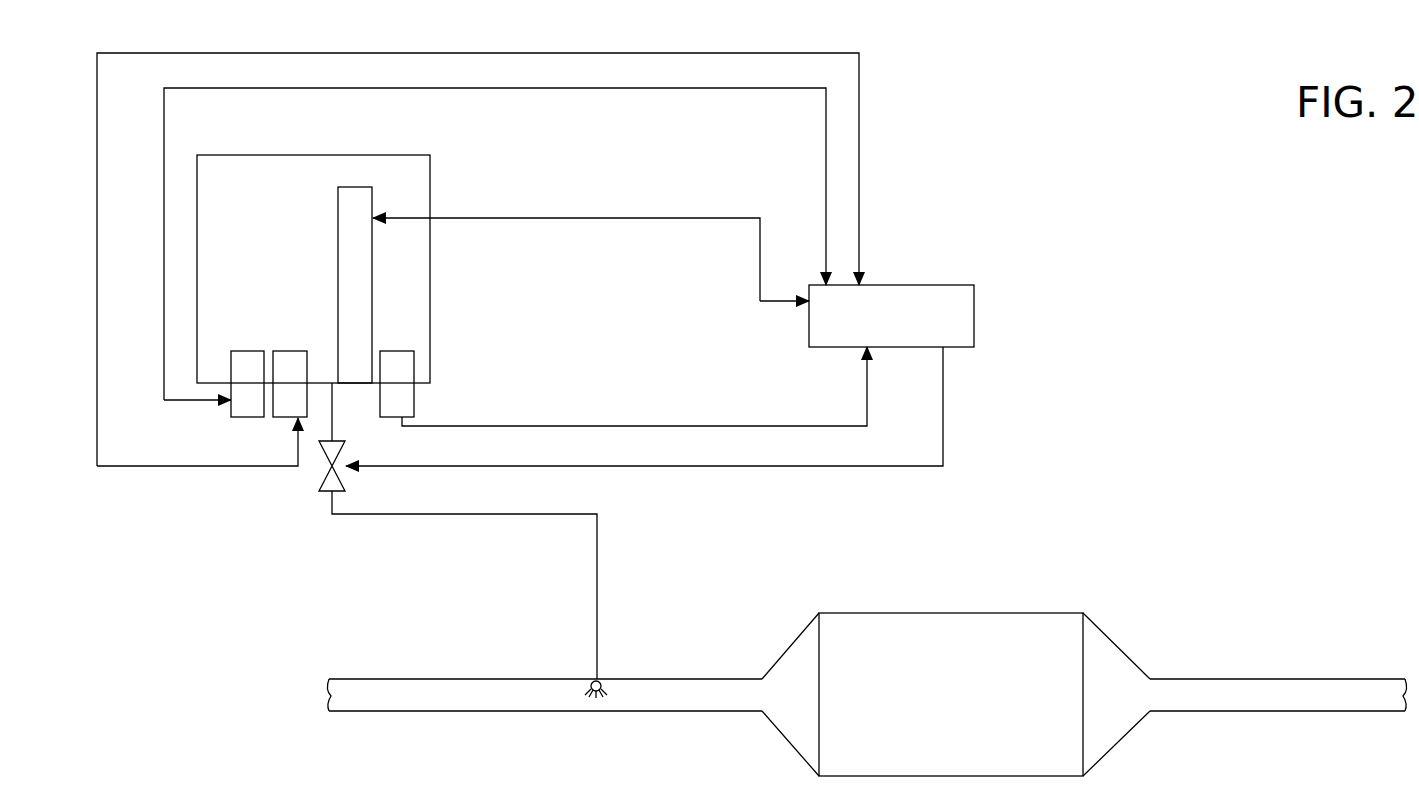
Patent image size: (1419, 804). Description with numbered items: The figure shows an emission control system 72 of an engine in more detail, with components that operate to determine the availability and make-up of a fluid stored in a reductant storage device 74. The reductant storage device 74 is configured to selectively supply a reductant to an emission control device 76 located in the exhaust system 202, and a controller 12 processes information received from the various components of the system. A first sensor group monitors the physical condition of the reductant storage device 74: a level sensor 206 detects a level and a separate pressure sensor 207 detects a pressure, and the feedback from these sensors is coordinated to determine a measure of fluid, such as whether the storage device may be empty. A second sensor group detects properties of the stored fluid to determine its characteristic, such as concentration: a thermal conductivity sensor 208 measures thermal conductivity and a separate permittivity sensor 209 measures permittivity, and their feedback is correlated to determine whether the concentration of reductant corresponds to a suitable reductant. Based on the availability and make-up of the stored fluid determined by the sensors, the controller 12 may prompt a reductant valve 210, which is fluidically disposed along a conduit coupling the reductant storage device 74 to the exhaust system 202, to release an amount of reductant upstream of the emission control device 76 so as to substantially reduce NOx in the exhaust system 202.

The controller 12 is at (893, 284).
The emission control system 72 is at (1190, 290).
The reductant storage device 74 is at (315, 155).
The emission control device 76 is at (950, 777).
The exhaust system 202 is at (415, 679).
The level sensor 206 is at (337, 243).
The pressure sensor 207 is at (414, 413).
The thermal conductivity sensor 208 is at (247, 419).
The permittivity sensor 209 is at (290, 350).
The reductant valve 210 is at (318, 492).